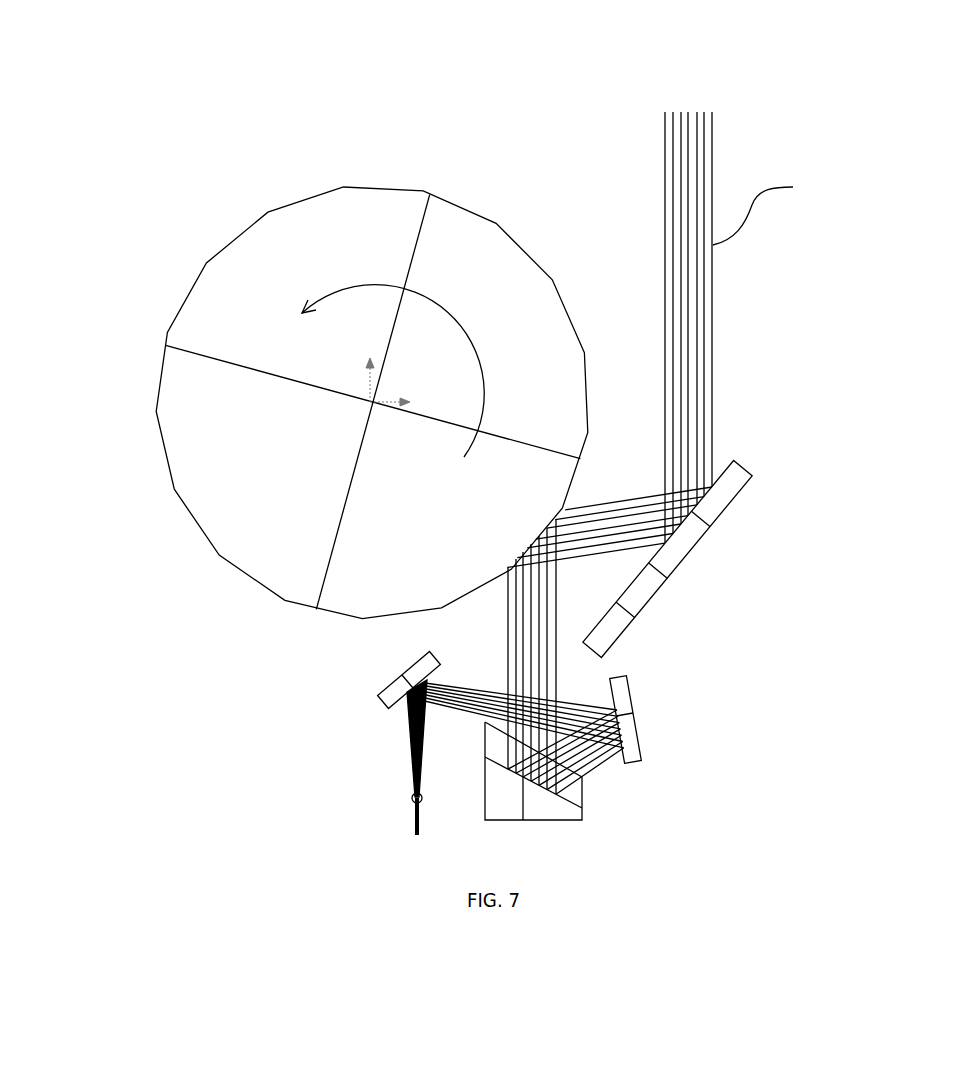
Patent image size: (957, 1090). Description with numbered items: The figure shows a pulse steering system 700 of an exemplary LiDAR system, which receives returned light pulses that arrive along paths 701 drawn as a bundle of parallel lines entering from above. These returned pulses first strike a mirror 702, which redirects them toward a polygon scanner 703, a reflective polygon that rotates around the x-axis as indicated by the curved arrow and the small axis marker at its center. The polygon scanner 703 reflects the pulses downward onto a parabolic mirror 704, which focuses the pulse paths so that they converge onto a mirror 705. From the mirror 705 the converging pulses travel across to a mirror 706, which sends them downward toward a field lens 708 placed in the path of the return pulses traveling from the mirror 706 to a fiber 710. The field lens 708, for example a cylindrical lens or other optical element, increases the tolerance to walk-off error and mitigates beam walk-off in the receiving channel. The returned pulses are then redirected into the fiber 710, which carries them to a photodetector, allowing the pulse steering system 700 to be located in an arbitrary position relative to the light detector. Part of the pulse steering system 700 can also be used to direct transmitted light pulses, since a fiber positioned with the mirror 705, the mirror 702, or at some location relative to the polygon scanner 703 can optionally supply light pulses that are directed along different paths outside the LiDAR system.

The pulse steering system 700 is at (133, 97).
The paths 701 is at (645, 205).
The mirror 702 is at (683, 553).
The polygon scanner 703 is at (340, 188).
The parabolic mirror 704 is at (585, 810).
The mirror 705 is at (635, 716).
The mirror 706 is at (378, 697).
The field lens 708 is at (410, 798).
The fiber 710 is at (410, 822).